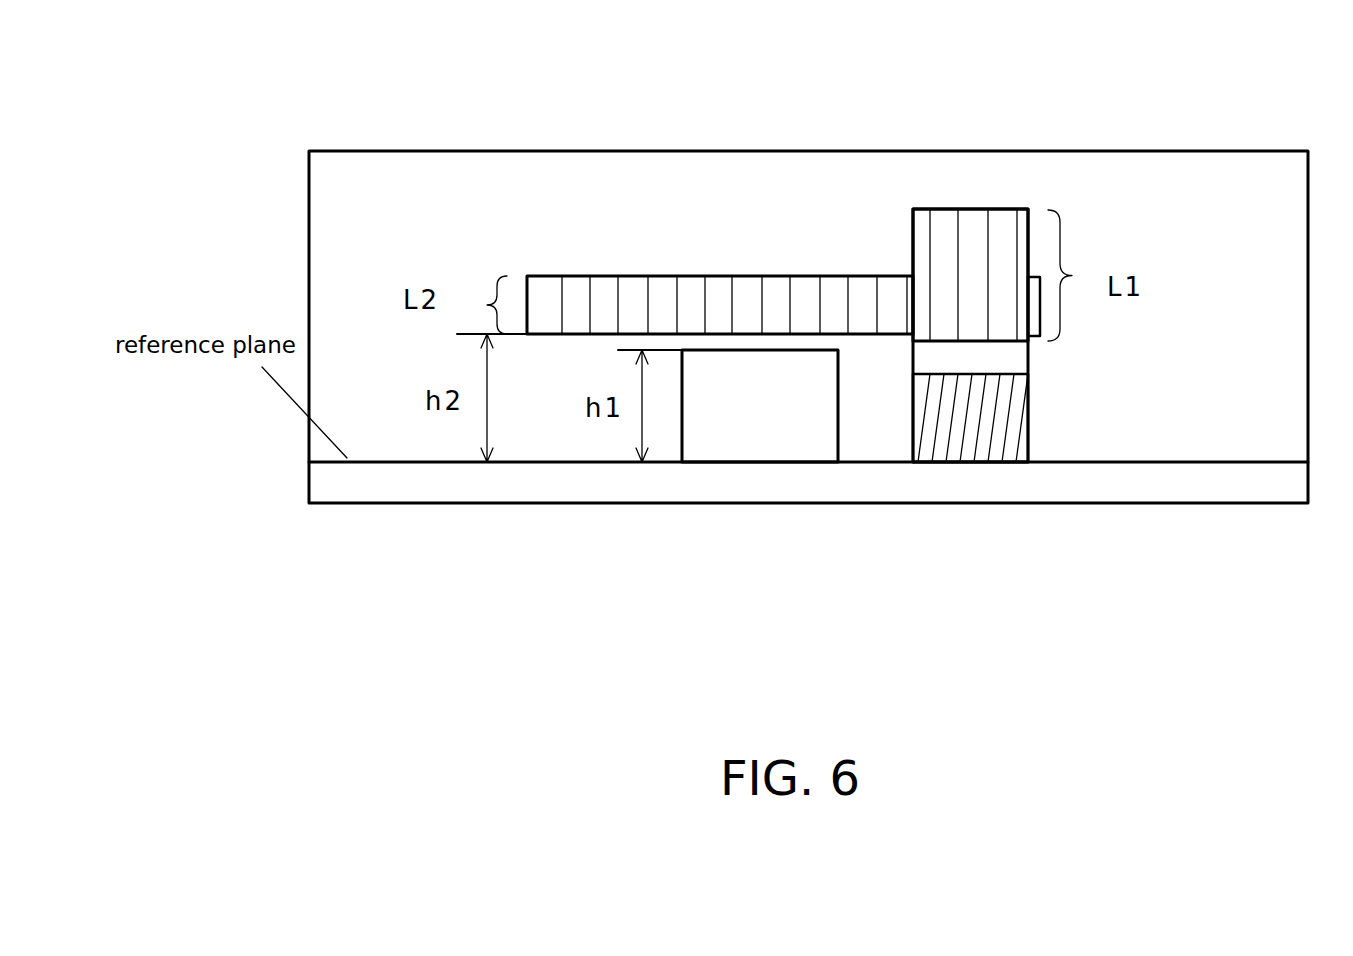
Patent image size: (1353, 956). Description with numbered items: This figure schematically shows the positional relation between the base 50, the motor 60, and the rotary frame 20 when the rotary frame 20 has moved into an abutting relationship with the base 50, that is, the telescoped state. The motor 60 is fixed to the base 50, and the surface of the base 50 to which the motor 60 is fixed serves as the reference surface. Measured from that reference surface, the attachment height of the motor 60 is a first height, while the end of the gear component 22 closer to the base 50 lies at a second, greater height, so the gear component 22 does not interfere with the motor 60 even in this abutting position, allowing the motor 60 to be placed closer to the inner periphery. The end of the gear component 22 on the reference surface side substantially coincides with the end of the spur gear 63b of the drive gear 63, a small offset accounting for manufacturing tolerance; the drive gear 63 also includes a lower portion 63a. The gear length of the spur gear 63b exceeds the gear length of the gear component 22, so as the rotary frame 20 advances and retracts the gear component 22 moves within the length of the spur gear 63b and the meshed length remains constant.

The rotary frame 20 is at (460, 112).
The gear component 22 is at (720, 295).
The base 50 is at (480, 490).
The motor 60 is at (735, 430).
The drive gear 63 is at (926, 178).
The connector base portion 63a is at (982, 433).
The spur gear 63b is at (992, 255).